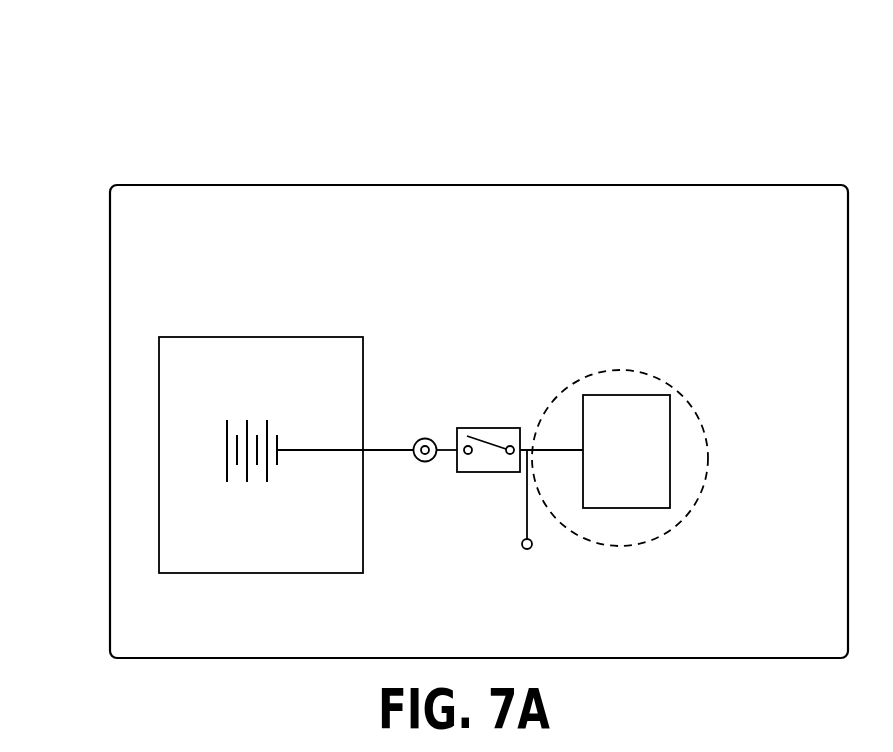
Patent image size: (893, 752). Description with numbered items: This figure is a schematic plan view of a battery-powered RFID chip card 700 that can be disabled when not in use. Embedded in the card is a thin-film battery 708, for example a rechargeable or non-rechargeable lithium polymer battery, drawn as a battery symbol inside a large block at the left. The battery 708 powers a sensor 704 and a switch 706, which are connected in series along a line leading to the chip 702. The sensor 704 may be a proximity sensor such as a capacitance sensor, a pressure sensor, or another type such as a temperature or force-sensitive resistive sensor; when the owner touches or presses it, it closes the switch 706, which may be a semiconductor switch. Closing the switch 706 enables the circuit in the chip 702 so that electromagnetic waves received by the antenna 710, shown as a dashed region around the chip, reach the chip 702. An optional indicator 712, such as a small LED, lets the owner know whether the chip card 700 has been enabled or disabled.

The chip card 700 is at (132, 84).
The chip 702 is at (647, 395).
The sensor 704 is at (428, 438).
The switch 706 is at (497, 442).
The thin-film battery 708 is at (287, 337).
The antenna 710 is at (704, 426).
The indicator 712 is at (523, 551).